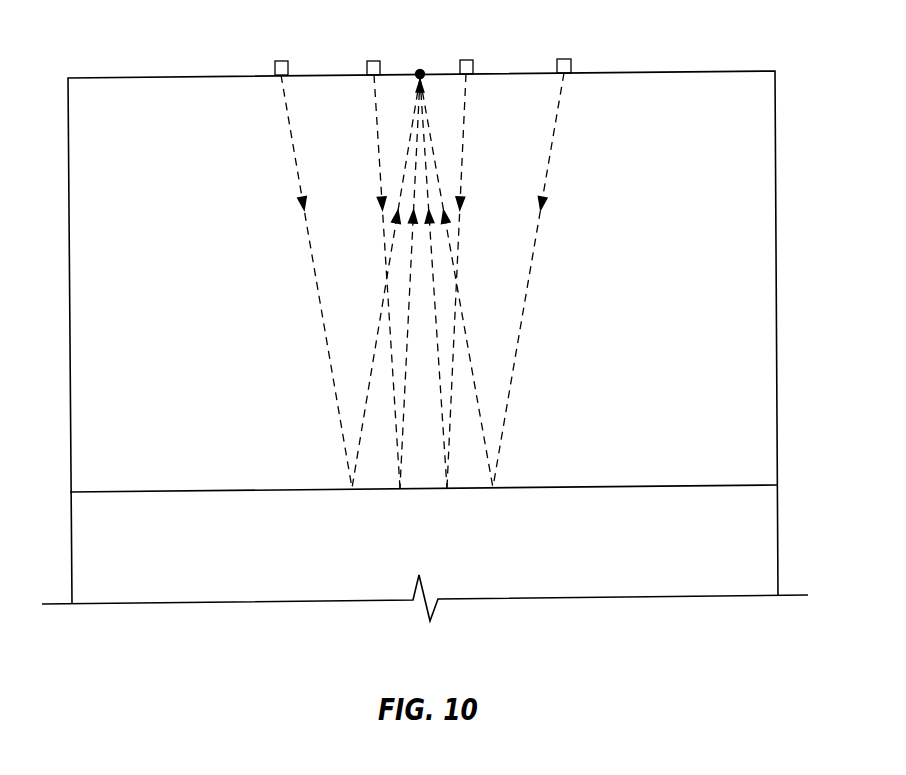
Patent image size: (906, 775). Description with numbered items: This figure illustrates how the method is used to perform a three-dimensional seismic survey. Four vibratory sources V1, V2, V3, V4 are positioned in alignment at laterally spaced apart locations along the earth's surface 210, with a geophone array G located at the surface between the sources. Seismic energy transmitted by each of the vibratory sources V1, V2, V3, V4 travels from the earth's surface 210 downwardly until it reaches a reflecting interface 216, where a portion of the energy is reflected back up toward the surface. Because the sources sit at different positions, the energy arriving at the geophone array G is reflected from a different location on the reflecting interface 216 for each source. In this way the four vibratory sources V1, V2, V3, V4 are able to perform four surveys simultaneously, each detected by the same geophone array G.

The earth's surface 210 is at (439, 318).
The reflecting interface 216 is at (423, 470).
The vibratory source V1 is at (280, 257).
The vibratory source V2 is at (352, 257).
The vibratory source V3 is at (492, 256).
The vibratory source V4 is at (563, 255).
The geophone array G is at (422, 257).